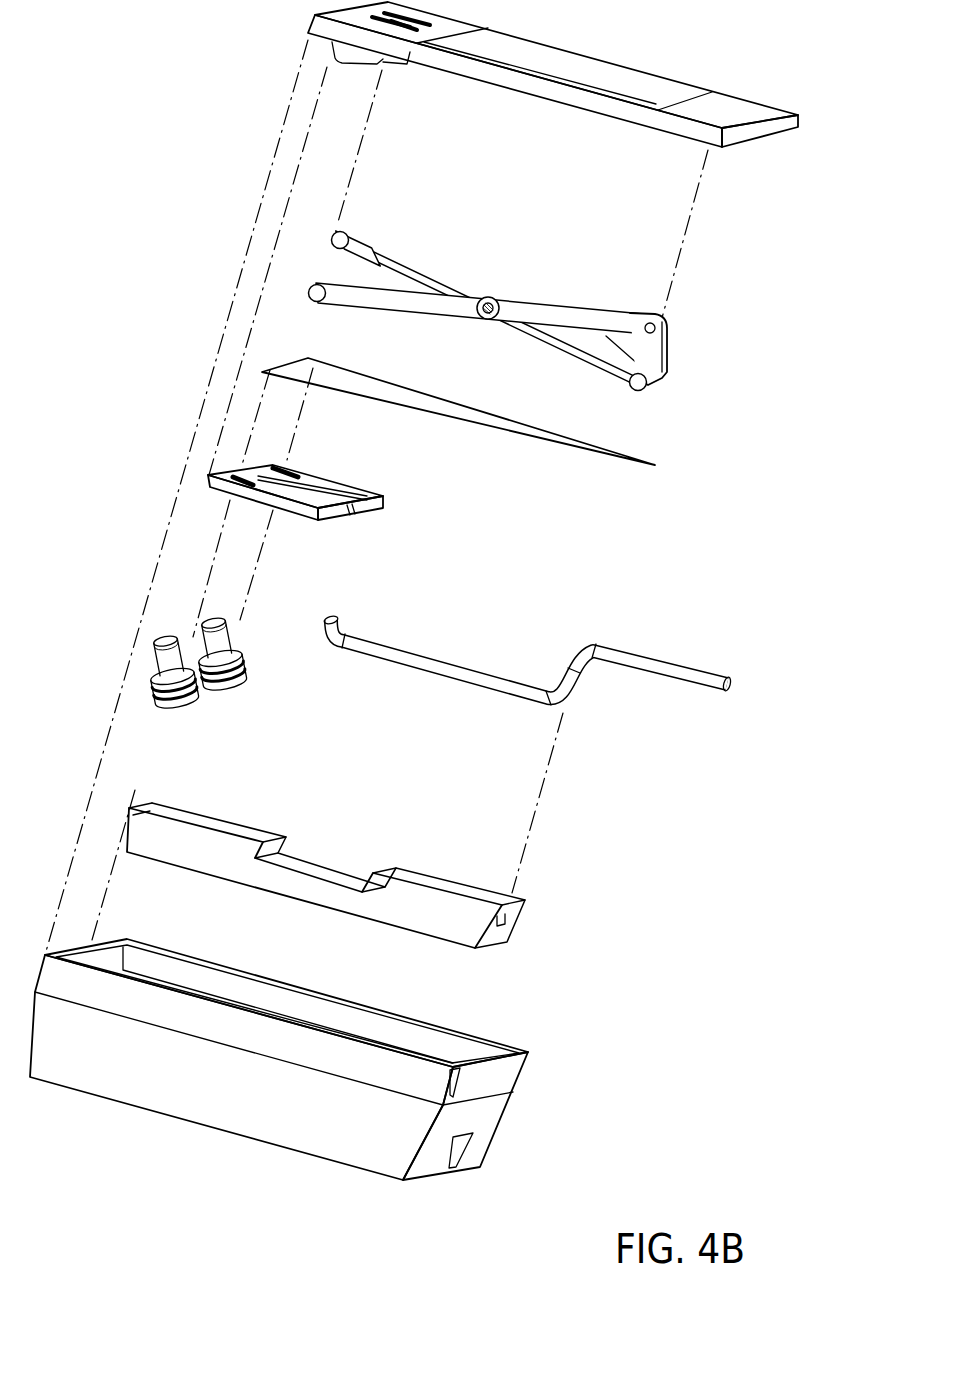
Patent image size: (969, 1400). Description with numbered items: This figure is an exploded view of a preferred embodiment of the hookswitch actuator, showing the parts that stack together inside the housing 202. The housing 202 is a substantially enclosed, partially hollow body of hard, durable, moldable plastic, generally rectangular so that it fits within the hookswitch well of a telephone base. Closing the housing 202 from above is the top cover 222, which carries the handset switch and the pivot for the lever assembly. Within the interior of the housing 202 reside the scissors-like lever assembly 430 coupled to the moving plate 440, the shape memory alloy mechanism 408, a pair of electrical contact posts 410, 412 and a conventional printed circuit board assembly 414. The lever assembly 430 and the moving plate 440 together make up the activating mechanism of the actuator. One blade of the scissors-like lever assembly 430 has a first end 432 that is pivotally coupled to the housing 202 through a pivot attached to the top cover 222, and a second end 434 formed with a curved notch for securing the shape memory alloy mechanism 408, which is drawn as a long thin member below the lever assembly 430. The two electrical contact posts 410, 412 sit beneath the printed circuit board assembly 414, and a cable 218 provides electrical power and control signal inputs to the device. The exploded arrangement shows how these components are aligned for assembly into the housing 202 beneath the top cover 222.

The housing 202 is at (425, 1173).
The cable 218 is at (582, 685).
The top cover 222 is at (750, 147).
The shape memory alloy (SMA) mechanism 408 is at (645, 468).
The electrical contact post 410 is at (228, 700).
The electrical contact post 412 is at (219, 653).
The printed circuit board (PCB) assembly 414 is at (227, 470).
The scissors-like lever assembly 430 is at (475, 273).
The first end 432 is at (337, 222).
The second end 434 is at (660, 388).
The moving plate 440 is at (493, 950).